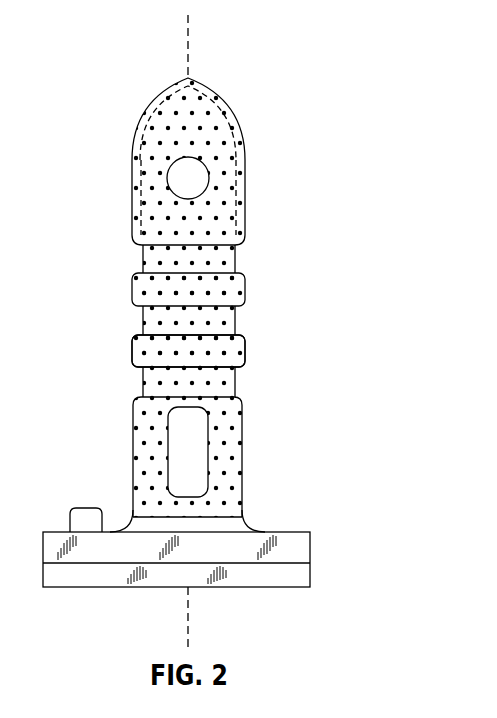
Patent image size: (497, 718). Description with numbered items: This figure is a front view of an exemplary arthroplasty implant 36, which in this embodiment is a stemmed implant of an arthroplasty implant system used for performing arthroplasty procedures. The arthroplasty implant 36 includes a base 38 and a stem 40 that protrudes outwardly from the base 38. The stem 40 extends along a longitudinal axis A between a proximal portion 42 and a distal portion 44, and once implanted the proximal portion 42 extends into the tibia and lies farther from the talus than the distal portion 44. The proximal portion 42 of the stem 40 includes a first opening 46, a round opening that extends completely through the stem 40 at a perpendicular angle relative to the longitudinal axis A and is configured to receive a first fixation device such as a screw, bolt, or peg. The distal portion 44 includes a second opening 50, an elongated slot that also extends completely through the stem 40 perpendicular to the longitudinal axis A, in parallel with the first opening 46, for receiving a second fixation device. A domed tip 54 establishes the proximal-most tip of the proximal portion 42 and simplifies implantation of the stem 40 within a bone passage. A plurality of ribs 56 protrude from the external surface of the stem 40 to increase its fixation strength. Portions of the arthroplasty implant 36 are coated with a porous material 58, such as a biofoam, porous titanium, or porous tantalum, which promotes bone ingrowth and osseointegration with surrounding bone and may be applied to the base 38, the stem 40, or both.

The arthroplasty implant 36 is at (229, 77).
The base 38 is at (300, 555).
The stem 40 is at (230, 410).
The proximal portion 42 is at (246, 107).
The distal portion 44 is at (124, 497).
The first opening 46 is at (208, 180).
The second opening 50 is at (210, 430).
The domed tip 54 is at (155, 108).
The ribs 56 is at (242, 290).
The porous material 58 is at (140, 350).
The longitudinal axis A is at (188, 60).